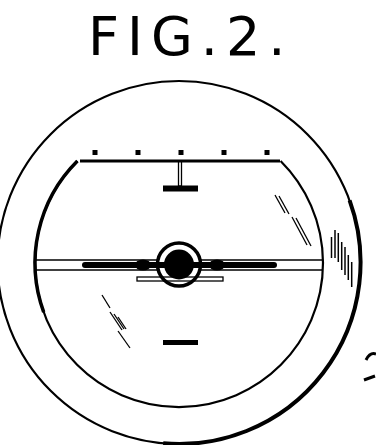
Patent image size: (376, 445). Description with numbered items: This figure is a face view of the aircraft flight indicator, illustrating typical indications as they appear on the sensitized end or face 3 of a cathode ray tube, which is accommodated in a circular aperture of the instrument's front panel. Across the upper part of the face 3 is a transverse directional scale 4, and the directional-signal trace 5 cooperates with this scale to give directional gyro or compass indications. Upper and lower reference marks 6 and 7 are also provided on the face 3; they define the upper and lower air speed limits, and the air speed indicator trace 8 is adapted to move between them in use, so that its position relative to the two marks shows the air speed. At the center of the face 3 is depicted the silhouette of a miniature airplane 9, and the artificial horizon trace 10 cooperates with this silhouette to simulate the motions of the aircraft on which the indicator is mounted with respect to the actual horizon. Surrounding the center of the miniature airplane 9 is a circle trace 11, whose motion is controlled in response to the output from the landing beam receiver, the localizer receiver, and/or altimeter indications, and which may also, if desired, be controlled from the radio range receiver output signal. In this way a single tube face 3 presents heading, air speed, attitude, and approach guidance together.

The face 3 is at (100, 232).
The transverse directional scale 4 is at (270, 120).
The directional-signal trace 5 is at (183, 175).
The upper reference mark 6 is at (198, 192).
The lower reference mark 7 is at (200, 342).
The air speed indicator trace 8 is at (225, 280).
The miniature airplane 9 is at (223, 263).
The artificial horizon trace 10 is at (62, 271).
The circle trace 11 is at (172, 242).